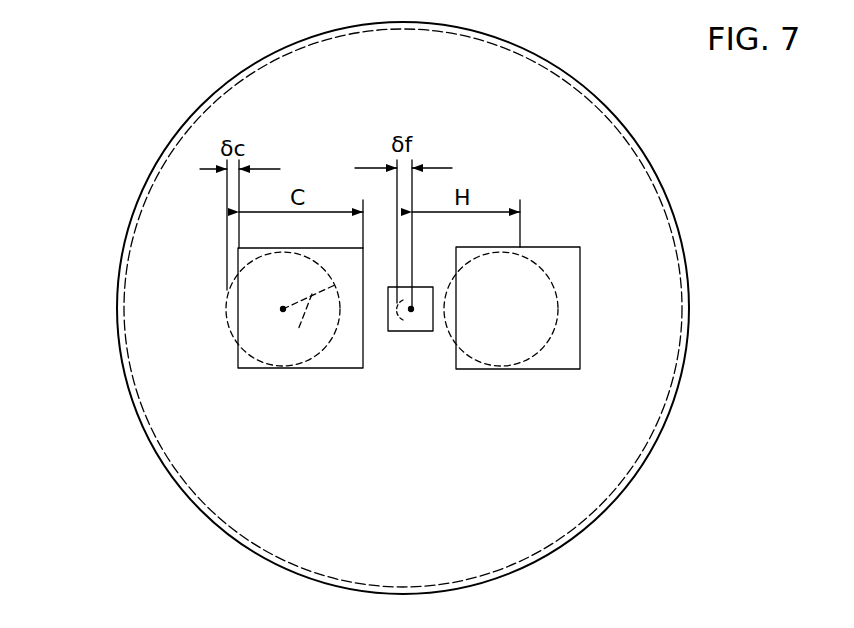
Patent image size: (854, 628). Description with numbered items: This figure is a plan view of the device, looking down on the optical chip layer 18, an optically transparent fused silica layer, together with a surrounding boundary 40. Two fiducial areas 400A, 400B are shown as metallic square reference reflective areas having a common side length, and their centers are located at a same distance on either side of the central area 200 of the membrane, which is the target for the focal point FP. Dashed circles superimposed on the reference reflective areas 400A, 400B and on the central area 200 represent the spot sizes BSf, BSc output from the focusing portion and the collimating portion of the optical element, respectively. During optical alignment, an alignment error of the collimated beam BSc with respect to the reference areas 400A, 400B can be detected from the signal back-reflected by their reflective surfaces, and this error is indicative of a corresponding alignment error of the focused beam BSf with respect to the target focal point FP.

The optical chip layer 18 is at (140, 432).
The edge exclusion boundary 40 is at (130, 247).
The fiducial area 400A is at (333, 368).
The fiducial area 400B is at (543, 351).
The central area 200 is at (445, 351).
The focal point FP is at (413, 309).
The spot size of focused beam BSf is at (402, 323).
The spot size of collimated beam BSc is at (565, 302).